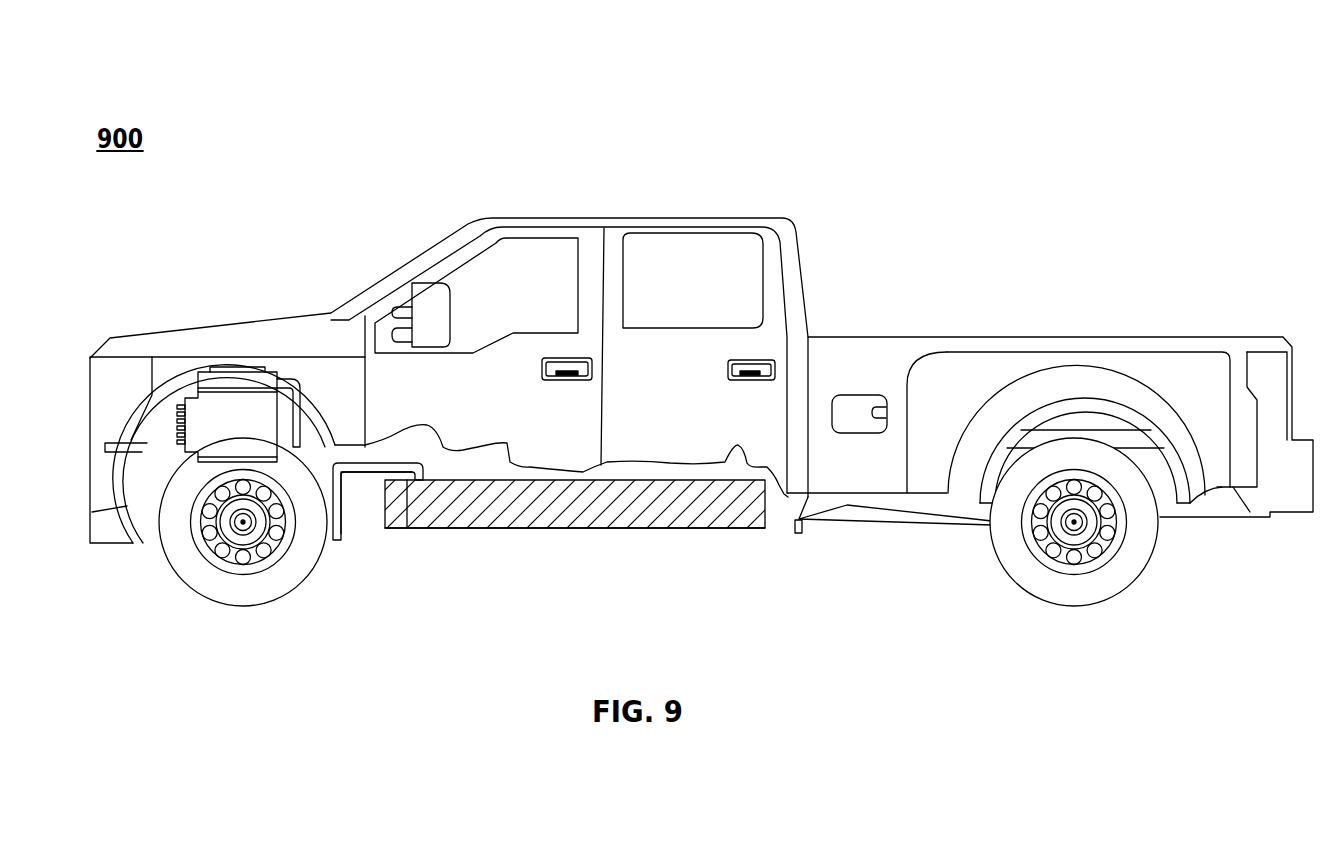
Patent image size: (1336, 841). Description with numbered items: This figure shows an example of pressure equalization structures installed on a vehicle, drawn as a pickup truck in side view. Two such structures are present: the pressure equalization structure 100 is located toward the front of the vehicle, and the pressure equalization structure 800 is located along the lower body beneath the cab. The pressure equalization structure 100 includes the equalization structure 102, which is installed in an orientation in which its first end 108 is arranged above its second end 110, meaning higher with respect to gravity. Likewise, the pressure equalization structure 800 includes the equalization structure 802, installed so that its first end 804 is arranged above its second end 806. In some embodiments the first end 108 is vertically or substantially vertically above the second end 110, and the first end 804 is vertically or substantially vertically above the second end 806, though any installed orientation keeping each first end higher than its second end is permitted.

The pressure equalization structure 100 is at (222, 348).
The equalization structure 102 is at (316, 437).
The first end 108 is at (279, 485).
The second end 110 is at (264, 551).
The pressure equalization structure 800 is at (541, 506).
The equalization structure 802 is at (339, 541).
The first end 804 is at (423, 528).
The second end 806 is at (343, 535).